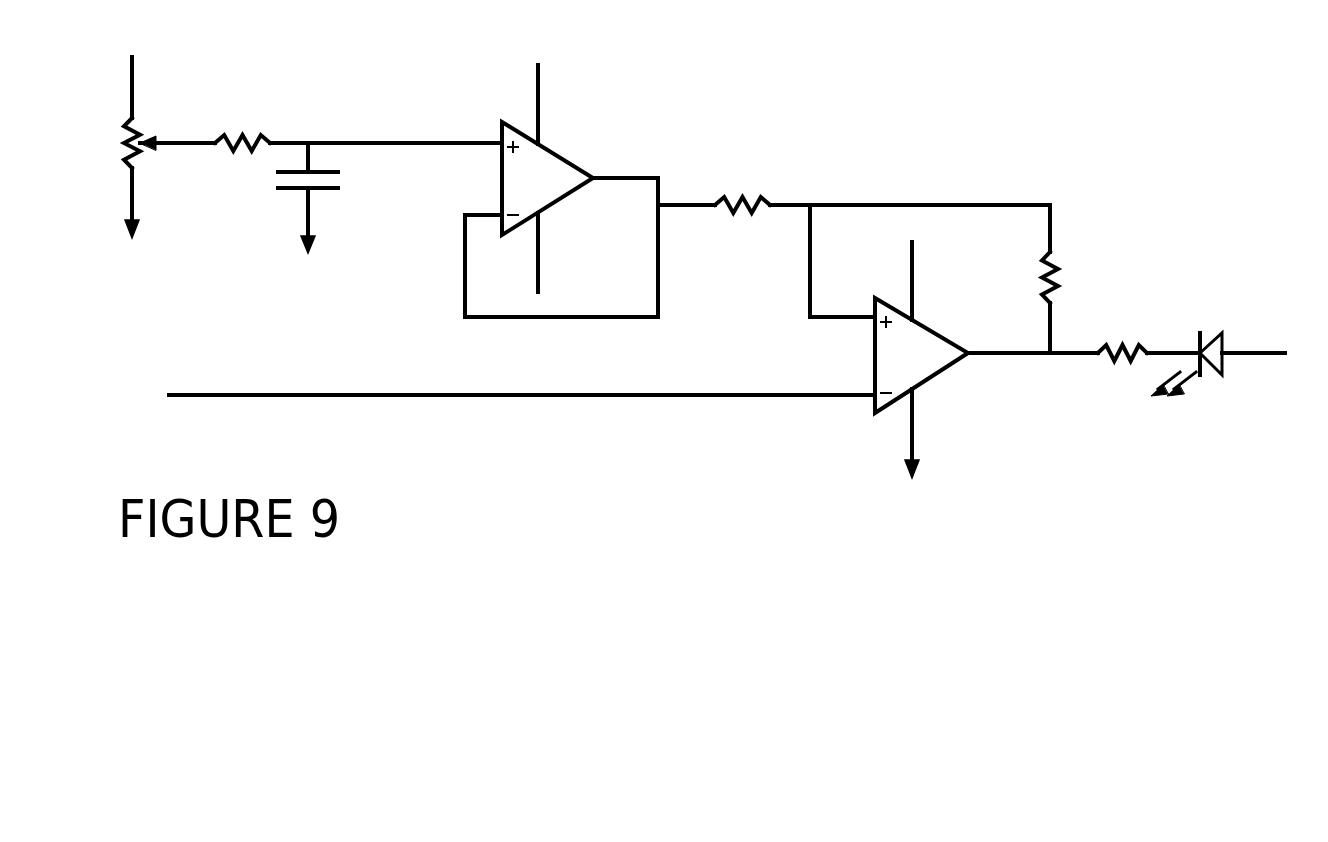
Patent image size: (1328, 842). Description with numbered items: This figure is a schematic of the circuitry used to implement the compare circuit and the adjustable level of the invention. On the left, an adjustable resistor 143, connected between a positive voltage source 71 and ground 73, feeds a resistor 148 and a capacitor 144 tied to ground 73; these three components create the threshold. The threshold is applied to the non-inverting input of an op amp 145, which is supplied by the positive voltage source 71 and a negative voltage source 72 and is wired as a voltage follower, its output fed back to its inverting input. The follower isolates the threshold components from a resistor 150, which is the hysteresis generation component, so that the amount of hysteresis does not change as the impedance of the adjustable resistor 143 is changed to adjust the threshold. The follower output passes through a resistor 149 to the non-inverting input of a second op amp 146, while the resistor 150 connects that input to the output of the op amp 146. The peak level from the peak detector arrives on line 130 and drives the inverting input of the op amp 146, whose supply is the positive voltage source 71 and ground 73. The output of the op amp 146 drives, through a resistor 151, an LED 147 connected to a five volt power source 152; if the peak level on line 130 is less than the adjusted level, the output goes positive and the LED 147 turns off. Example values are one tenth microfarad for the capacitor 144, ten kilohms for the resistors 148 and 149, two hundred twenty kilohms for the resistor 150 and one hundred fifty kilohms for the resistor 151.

The positive voltage source 71 is at (548, 78).
The negative voltage source 72 is at (548, 268).
The ground 73 is at (141, 67).
The line 130 is at (198, 398).
The adjustable resistor 143 is at (152, 157).
The capacitor 144 is at (345, 175).
The op amp 145 is at (567, 203).
The op amp 146 is at (940, 388).
The LED 147 is at (1208, 385).
The resistor 148 is at (243, 128).
The resistor 149 is at (733, 216).
The resistor 150 is at (1068, 273).
The resistor 151 is at (1143, 338).
The five volt power source 152 is at (1257, 357).